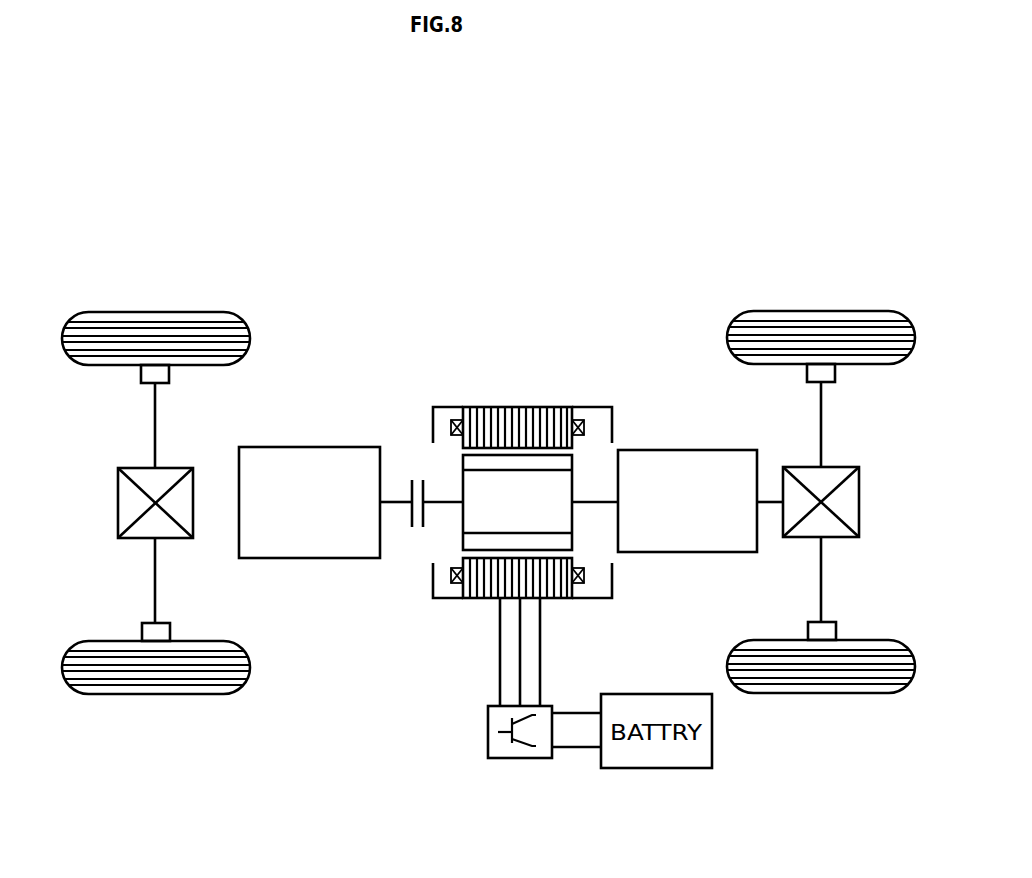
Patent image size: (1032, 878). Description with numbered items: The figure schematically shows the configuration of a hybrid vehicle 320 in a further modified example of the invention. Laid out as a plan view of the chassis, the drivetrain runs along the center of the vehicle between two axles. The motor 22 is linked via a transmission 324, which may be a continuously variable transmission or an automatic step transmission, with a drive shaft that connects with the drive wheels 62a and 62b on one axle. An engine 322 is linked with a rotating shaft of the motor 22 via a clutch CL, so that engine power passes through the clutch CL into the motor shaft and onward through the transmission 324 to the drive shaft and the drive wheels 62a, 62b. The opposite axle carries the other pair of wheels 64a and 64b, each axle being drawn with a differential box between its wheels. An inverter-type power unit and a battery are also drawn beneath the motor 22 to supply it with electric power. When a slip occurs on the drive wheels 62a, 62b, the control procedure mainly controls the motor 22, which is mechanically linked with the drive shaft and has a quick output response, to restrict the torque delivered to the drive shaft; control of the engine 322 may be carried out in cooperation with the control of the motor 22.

The hybrid vehicle 320 is at (512, 227).
The motor 22 is at (518, 407).
The engine 322 is at (310, 558).
The transmission 324 is at (688, 450).
The clutch CL is at (415, 527).
The drive wheel 62a is at (820, 310).
The drive wheel 62b is at (822, 693).
The front left wheel 64a is at (153, 312).
The rear left wheel 64b is at (157, 694).